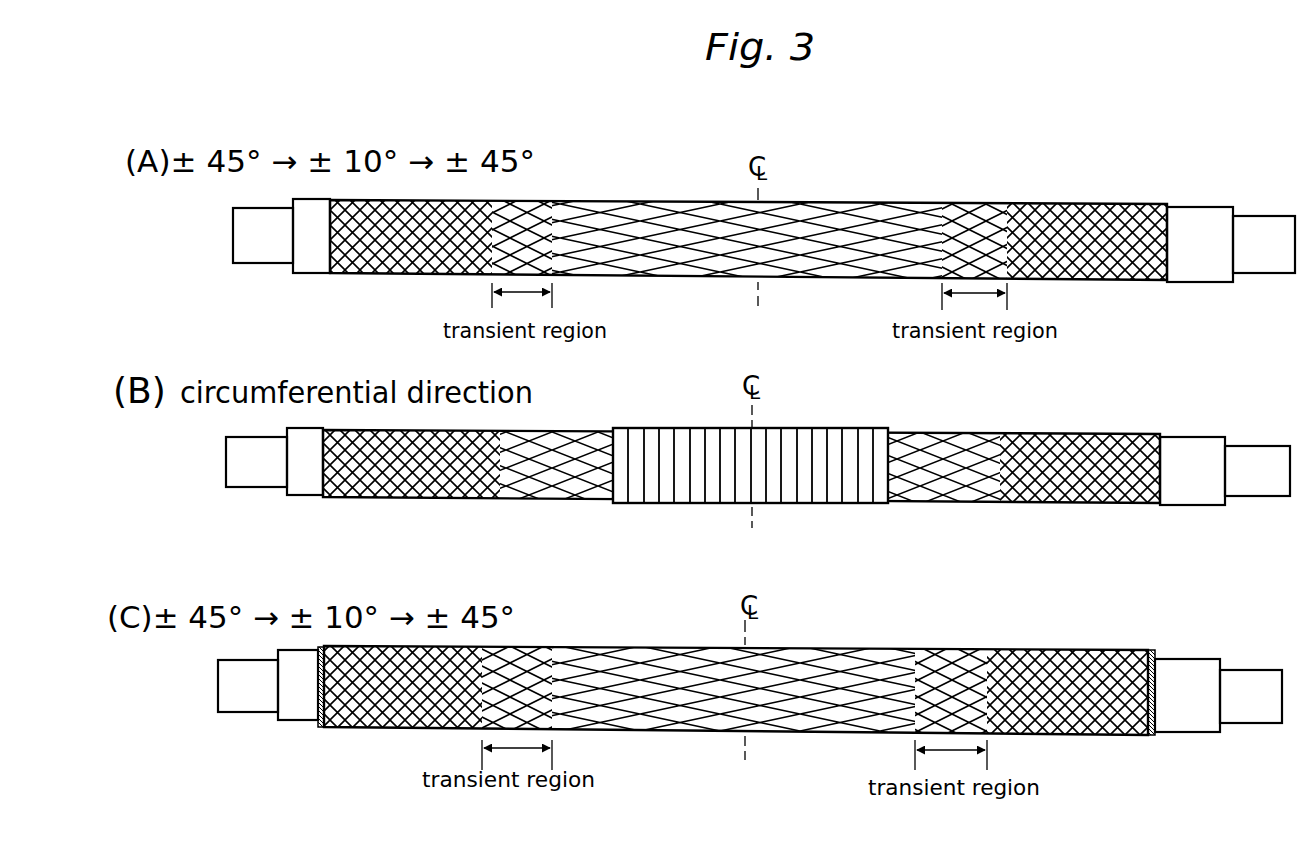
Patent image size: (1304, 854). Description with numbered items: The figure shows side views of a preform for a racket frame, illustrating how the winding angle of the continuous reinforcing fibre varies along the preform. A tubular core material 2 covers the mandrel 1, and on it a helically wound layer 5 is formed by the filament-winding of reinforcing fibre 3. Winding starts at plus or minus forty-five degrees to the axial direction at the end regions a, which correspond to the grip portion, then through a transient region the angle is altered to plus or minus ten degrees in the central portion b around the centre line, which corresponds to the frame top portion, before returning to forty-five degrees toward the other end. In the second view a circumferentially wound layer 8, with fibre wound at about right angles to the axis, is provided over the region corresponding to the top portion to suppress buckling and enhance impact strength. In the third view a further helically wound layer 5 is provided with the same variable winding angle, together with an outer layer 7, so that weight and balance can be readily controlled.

The mandrel 1 is at (258, 254).
The tubular core material 2 is at (314, 268).
The reinforcing fibre 3 is at (978, 204).
The helically wound layer 5 is at (640, 200).
The outer braided layer 7 is at (824, 737).
The circumferentially wound layer 8 is at (648, 428).
The end regions a is at (392, 289).
The central portion b is at (745, 285).